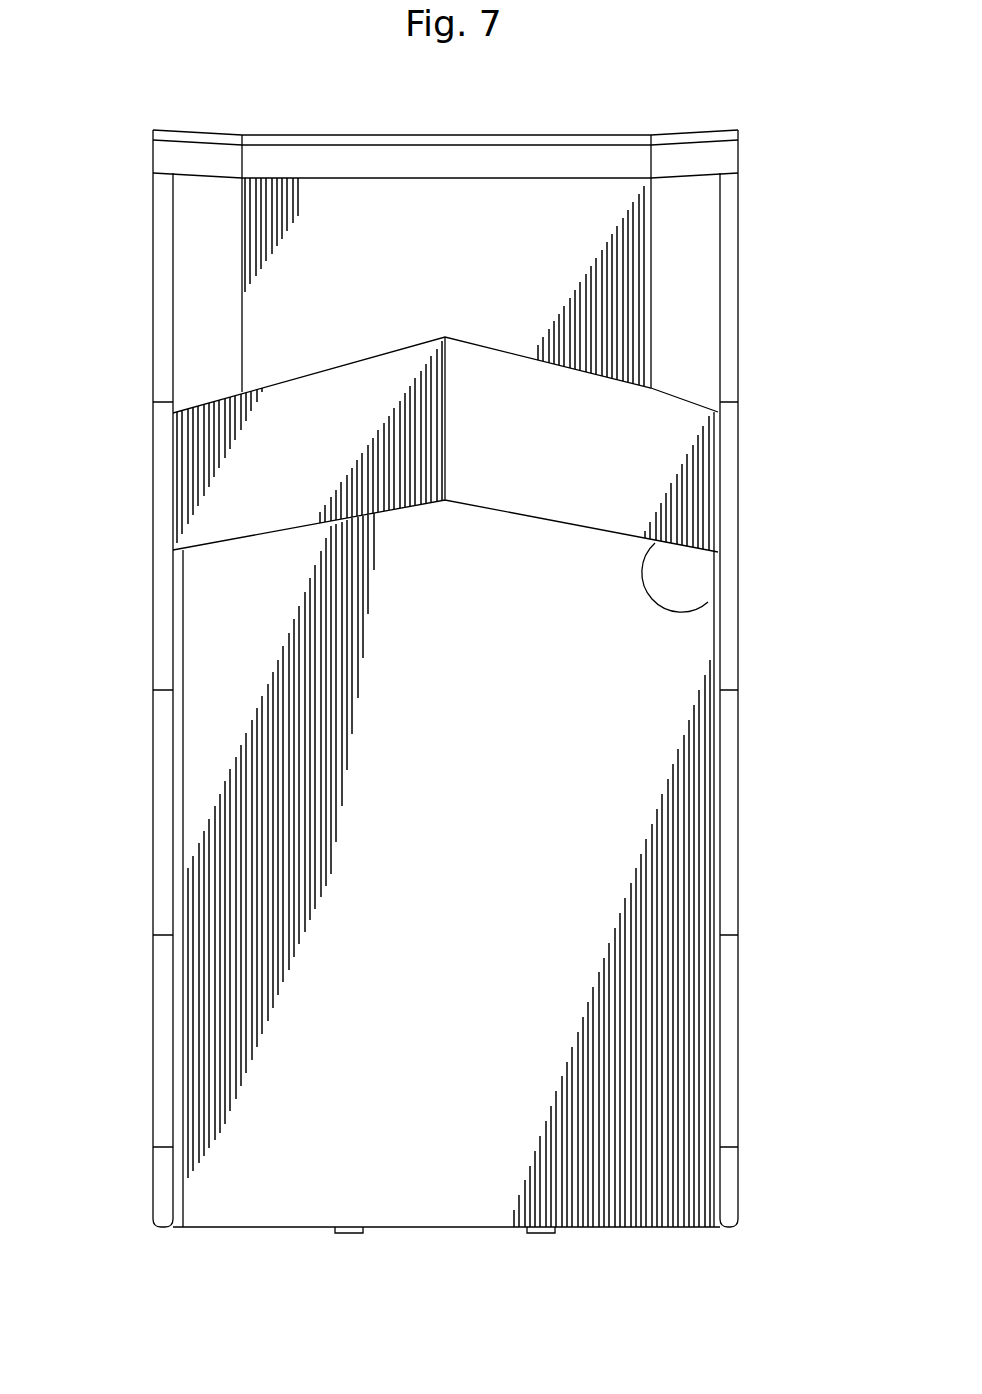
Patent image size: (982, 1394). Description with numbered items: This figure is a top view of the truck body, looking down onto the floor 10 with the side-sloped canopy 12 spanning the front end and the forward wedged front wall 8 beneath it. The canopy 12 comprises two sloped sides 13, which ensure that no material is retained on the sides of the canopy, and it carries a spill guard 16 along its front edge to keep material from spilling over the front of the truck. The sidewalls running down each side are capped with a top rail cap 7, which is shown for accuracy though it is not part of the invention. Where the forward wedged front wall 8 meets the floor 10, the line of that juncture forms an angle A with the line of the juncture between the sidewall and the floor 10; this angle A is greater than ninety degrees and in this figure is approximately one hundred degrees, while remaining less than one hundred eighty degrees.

The top rail cap 7 is at (165, 778).
The forward wedged front wall 8 is at (635, 453).
The floor 10 is at (307, 1152).
The side-sloped canopy 12 is at (388, 215).
The sloped sides 13 is at (207, 282).
The spill guard 16 is at (573, 160).
The angle A is at (674, 578).